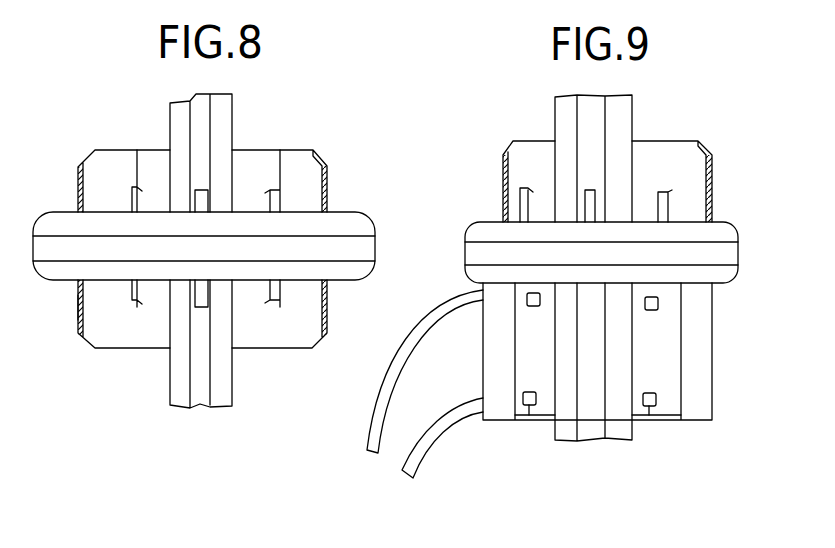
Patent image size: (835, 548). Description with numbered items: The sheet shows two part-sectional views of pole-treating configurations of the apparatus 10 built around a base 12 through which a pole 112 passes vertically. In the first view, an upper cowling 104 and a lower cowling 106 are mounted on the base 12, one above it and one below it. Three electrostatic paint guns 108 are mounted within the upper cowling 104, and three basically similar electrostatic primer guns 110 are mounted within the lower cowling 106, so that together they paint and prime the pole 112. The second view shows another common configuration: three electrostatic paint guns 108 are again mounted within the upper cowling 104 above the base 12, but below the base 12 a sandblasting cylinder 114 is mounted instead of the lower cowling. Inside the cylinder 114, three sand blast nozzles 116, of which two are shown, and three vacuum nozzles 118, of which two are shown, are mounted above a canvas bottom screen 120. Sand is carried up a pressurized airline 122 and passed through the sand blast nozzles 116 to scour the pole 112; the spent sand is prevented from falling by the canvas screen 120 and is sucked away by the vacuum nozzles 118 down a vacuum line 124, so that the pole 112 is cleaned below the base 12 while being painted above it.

In FIG. 8, the pneumatic tire assembly 10 is at (384, 232).
In FIG. 8, the base 12 is at (358, 213).
In FIG. 9, the base 12 is at (601, 252).
In FIG. 8, the upper cowling 104 is at (77, 182).
In FIG. 9, the upper cowling 104 is at (713, 166).
In FIG. 8, the lower cowling 106 is at (79, 303).
In FIG. 8, the electrostatic paint guns 108 is at (135, 151).
In FIG. 9, the electrostatic paint guns 108 is at (585, 191).
In FIG. 8, the electrostatic primer guns 110 is at (200, 308).
In FIG. 8, the pole 112 is at (222, 125).
In FIG. 9, the pole 112 is at (625, 135).
In FIG. 9, the sandblasting cylinder 114 is at (706, 342).
In FIG. 9, the sand blast nozzles 116 is at (527, 300).
In FIG. 9, the vacuum nozzles 118 is at (525, 407).
In FIG. 9, the canvas bottom screen 120 is at (536, 422).
In FIG. 9, the pressurized airline 122 is at (410, 362).
In FIG. 9, the vacuum line 124 is at (428, 438).